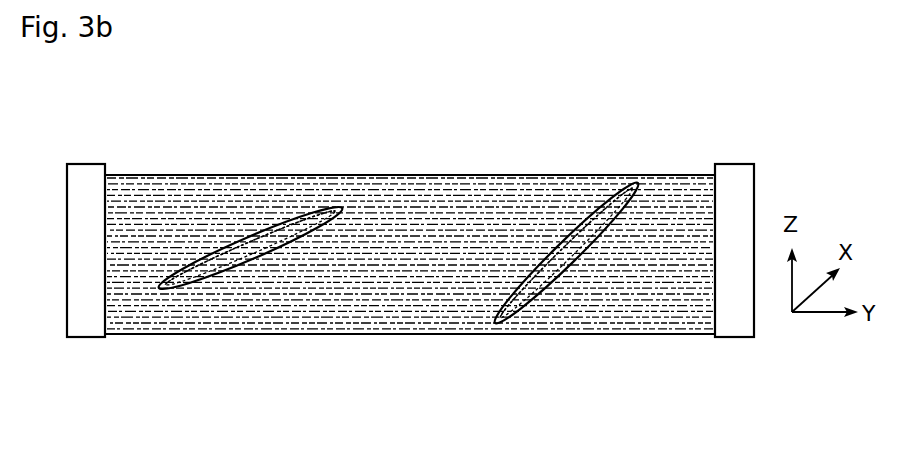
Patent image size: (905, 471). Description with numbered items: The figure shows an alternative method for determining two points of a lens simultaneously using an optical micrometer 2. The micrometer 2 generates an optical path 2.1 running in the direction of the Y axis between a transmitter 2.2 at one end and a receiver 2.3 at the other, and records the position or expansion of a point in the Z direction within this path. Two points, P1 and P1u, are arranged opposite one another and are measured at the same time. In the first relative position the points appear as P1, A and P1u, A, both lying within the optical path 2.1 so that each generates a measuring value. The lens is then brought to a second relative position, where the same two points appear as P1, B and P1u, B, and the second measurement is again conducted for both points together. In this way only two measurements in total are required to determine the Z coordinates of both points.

The optical micrometer 2 is at (415, 303).
The optical path 2.1 is at (412, 300).
The transmitter 2.2 is at (739, 293).
The receiver 2.3 is at (75, 337).
The point P1 in first position A P1, A is at (250, 242).
The point P1 in second position B P1, B is at (566, 251).
The point P1u in first position A P1u, A is at (340, 204).
The point P1u in second position B P1u, B is at (629, 179).